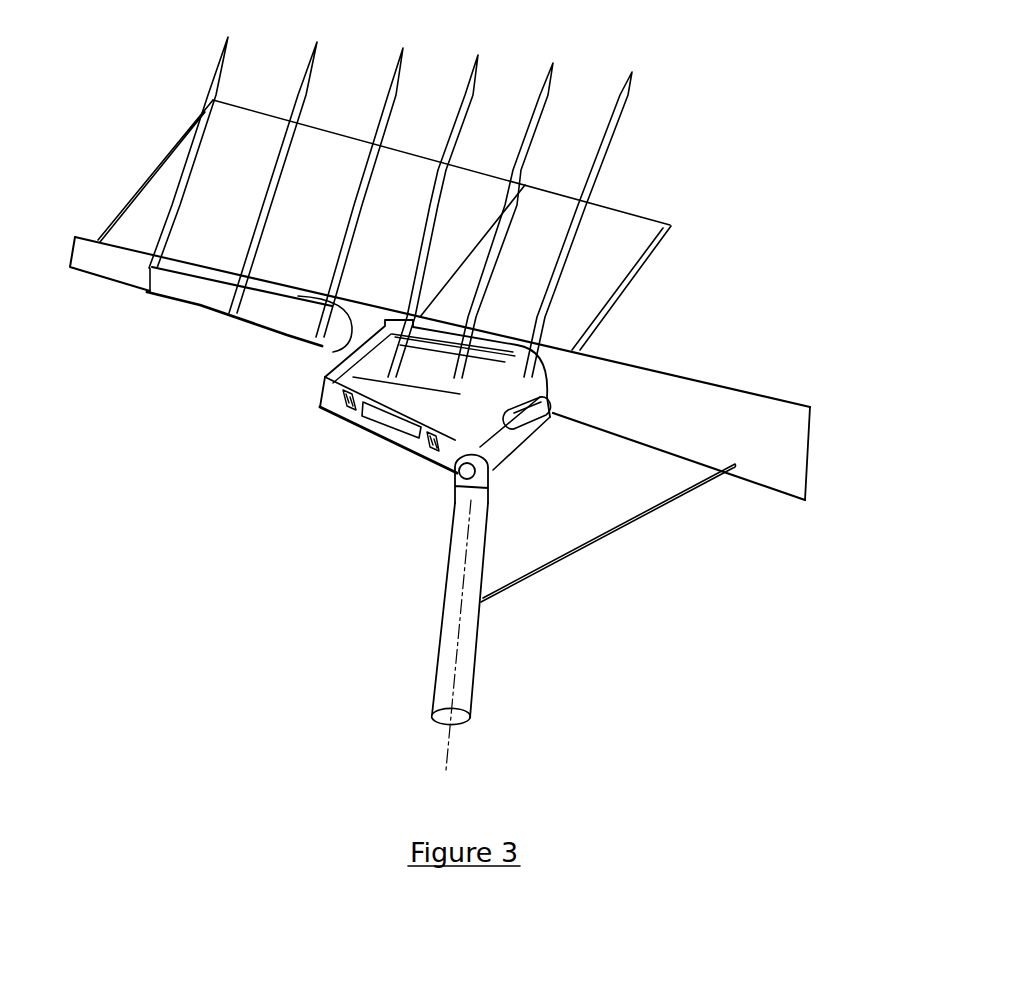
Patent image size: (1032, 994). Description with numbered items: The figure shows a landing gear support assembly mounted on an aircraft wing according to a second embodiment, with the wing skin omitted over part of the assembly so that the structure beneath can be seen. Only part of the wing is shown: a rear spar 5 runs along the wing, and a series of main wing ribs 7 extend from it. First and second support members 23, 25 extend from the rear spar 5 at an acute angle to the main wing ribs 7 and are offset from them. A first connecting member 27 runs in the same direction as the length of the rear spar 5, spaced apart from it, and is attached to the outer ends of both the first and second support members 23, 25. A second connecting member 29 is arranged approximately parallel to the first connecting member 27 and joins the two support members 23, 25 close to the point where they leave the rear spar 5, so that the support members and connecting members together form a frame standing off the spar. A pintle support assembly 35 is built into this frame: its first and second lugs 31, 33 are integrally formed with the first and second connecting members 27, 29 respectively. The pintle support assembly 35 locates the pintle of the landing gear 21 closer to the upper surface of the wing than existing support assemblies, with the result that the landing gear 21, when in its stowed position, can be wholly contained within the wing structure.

The rear spar 5 is at (118, 263).
The main wing ribs 7 is at (393, 75).
The landing gear 21 is at (509, 648).
The first support member 23 is at (400, 447).
The second support member 25 is at (355, 375).
The first connecting member 27 is at (340, 402).
The second connecting member 29 is at (427, 362).
The first lug 31 is at (462, 480).
The second lug 33 is at (513, 395).
The pintle support assembly 35 is at (555, 462).